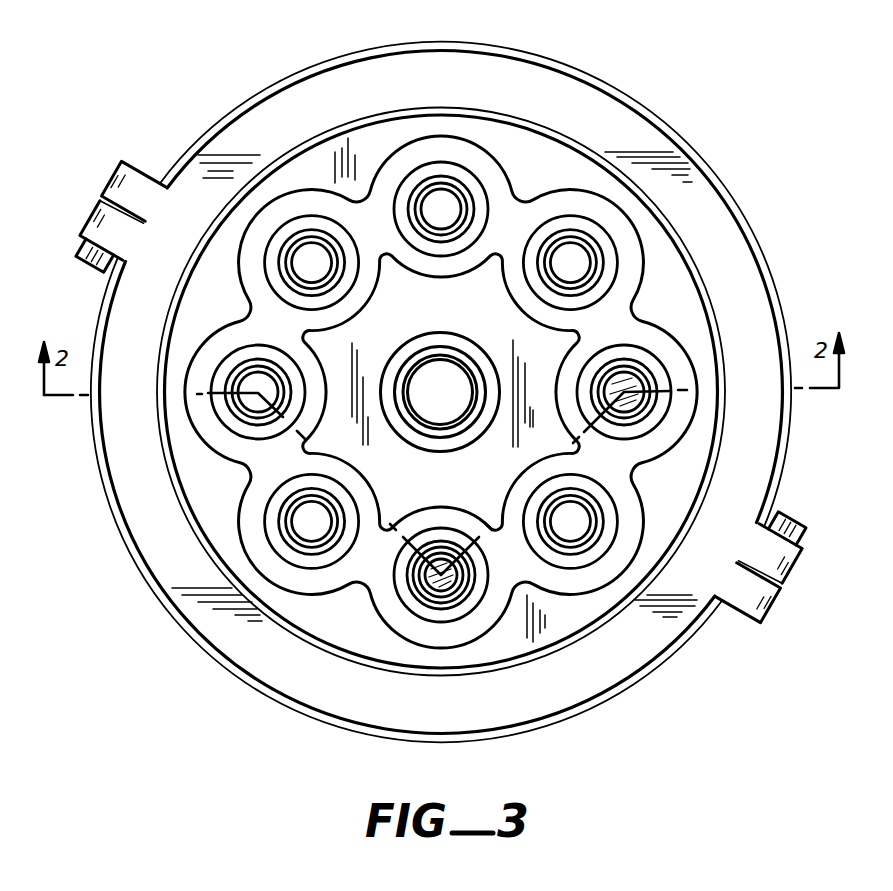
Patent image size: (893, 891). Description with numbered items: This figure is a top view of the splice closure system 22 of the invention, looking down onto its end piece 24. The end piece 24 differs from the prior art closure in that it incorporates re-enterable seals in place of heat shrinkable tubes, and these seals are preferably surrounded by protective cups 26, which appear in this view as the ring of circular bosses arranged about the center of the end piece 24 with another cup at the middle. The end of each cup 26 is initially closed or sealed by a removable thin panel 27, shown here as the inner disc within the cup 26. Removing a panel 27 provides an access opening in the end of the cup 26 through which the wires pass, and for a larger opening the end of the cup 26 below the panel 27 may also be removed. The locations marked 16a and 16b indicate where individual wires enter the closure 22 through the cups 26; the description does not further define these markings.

The splice closure system 22 is at (250, 693).
The end piece 24 is at (290, 177).
The protective cups 26 is at (486, 164).
The removable thin panel 27 is at (310, 522).
The bushing / bearing insert 16a is at (465, 578).
The bushing / bearing insert 16b is at (628, 372).